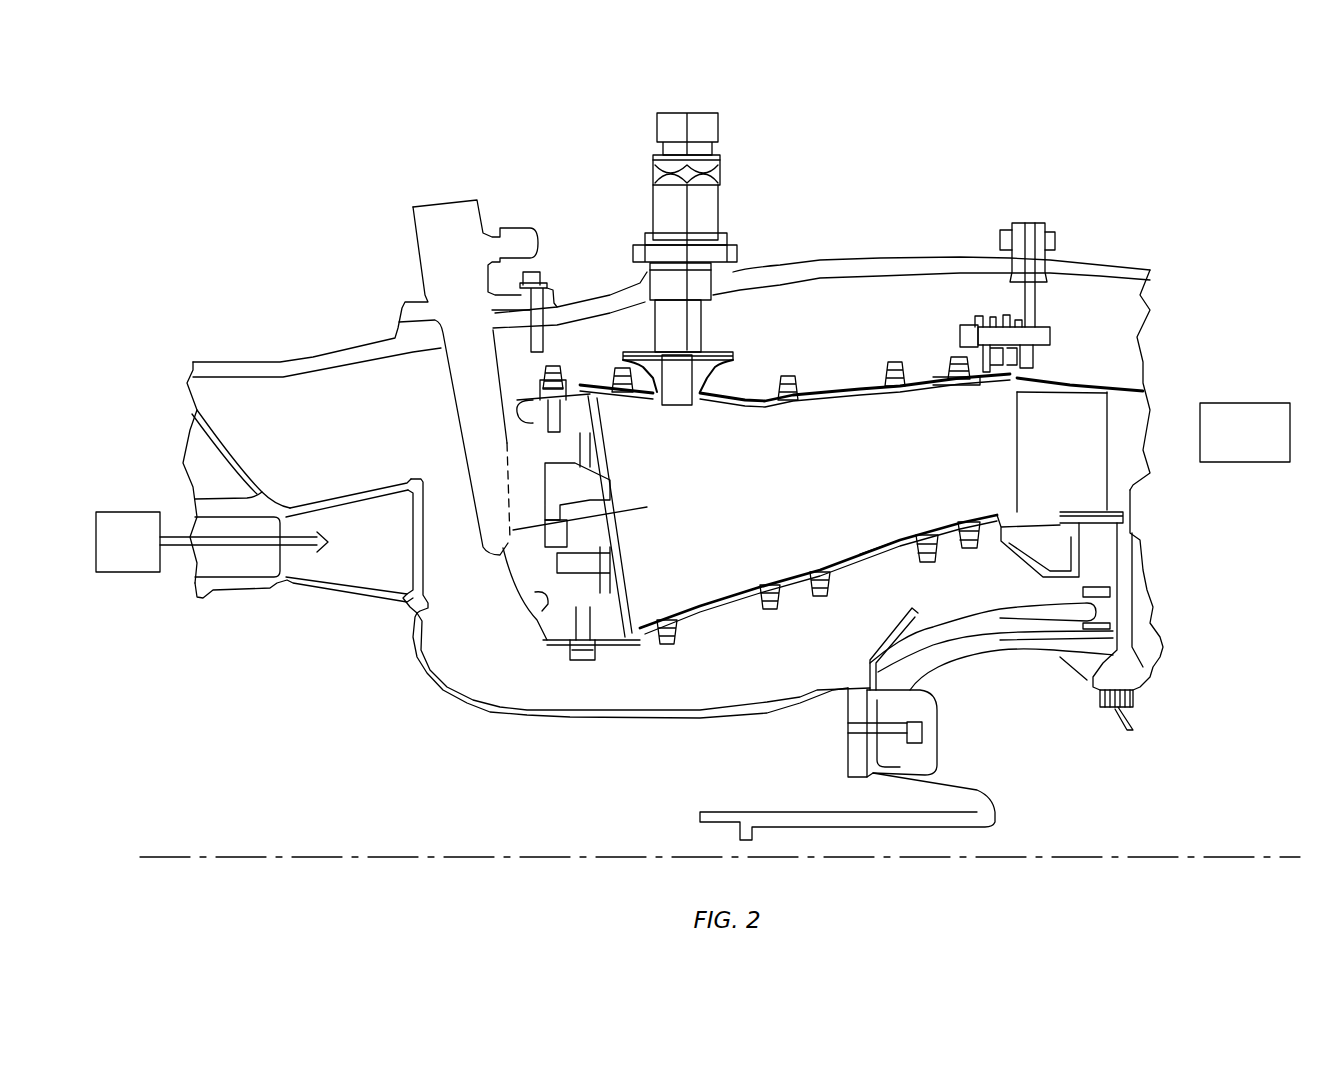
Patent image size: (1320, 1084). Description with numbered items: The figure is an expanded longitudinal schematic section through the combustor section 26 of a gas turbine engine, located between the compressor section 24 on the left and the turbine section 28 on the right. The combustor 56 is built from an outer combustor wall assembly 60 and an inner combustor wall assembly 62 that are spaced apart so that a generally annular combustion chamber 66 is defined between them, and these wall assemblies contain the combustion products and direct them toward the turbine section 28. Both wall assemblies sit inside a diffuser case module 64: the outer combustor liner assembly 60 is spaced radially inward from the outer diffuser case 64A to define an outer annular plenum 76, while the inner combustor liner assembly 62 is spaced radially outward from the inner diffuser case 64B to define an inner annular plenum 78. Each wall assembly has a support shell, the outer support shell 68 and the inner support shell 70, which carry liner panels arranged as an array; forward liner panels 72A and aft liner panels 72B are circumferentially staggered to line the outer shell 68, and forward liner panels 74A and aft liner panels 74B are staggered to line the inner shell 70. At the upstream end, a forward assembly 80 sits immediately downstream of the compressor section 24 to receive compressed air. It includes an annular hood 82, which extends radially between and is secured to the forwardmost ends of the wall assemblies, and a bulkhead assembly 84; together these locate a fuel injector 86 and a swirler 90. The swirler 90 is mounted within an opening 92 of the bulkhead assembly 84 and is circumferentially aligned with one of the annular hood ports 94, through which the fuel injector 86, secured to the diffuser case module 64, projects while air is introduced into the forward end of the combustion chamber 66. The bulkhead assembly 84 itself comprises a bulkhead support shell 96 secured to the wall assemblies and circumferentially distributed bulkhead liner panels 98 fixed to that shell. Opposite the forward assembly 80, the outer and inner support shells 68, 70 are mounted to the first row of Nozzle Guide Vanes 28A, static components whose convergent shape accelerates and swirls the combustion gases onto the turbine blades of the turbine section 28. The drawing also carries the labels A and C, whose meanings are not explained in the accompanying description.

The compressor section 24 is at (115, 554).
The combustor section 26 is at (941, 165).
The turbine section 28 is at (1231, 446).
The Nozzle Guide Vanes 28A is at (1040, 476).
The combustor 56 is at (965, 307).
The outer combustor wall assembly 60 is at (848, 386).
The inner combustor wall assembly 62 is at (890, 566).
The diffuser case module 64 is at (957, 256).
The outer diffuser case 64A is at (835, 262).
The inner diffuser case 64B is at (700, 722).
The combustion chamber 66 is at (798, 512).
The outer support shell 68 is at (916, 378).
The inner support shell 70 is at (853, 566).
The forward liner panels 72A is at (718, 404).
The aft liner panels 72B is at (890, 390).
The forward liner panels 74A is at (732, 587).
The aft liner panels 74B is at (884, 545).
The outer annular plenum 76 is at (756, 327).
The inner annular plenum 78 is at (734, 690).
The forward assembly 80 is at (528, 655).
The annular hood 82 is at (527, 612).
The bulkhead assembly 84 is at (614, 453).
The fuel injector 86 is at (447, 332).
The swirler 90 is at (615, 481).
The opening 92 is at (617, 555).
The annular hood ports 94 is at (518, 585).
The bulkhead support shell 96 is at (560, 607).
The bulkhead liner panels 98 is at (625, 576).
The engine central longitudinal axis A is at (1183, 857).
The core flow path C is at (289, 495).